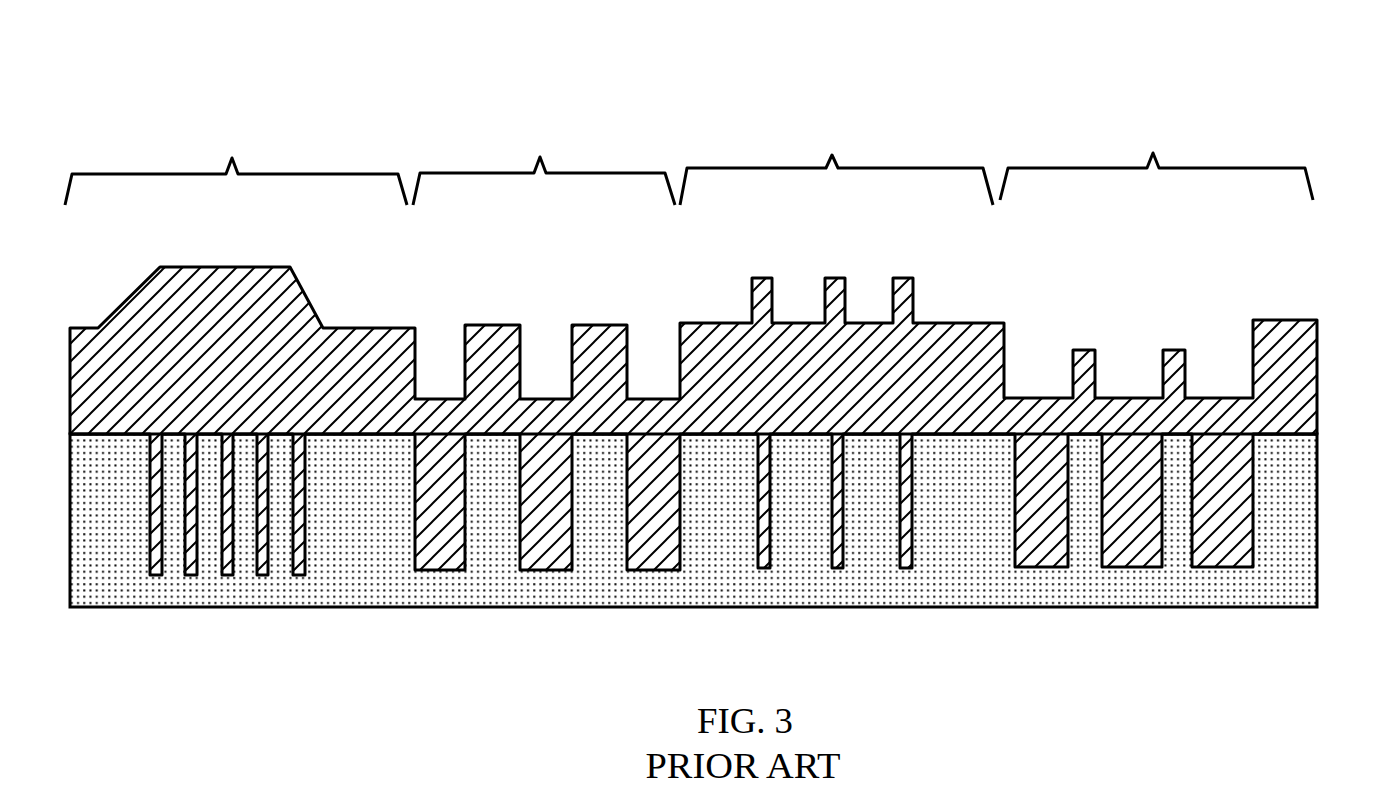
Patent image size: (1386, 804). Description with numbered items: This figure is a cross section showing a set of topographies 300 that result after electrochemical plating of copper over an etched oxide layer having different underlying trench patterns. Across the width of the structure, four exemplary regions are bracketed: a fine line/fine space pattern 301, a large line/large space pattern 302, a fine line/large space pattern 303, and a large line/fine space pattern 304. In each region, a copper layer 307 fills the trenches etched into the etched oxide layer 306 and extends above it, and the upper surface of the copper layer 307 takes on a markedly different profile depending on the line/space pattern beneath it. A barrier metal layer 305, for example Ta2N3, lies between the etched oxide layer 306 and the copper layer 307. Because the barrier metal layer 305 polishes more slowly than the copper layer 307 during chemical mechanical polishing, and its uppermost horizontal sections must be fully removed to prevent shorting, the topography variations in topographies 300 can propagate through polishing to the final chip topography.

The topographies 300 is at (1318, 287).
The fine line/fine space pattern 301 is at (236, 130).
The large line/large space pattern 302 is at (544, 130).
The fine line/large space pattern 303 is at (836, 130).
The large line/fine space pattern 304 is at (1156, 126).
The barrier metal layer 305 is at (1318, 428).
The etched oxide layer 306 is at (943, 522).
The copper layer 307 is at (844, 382).